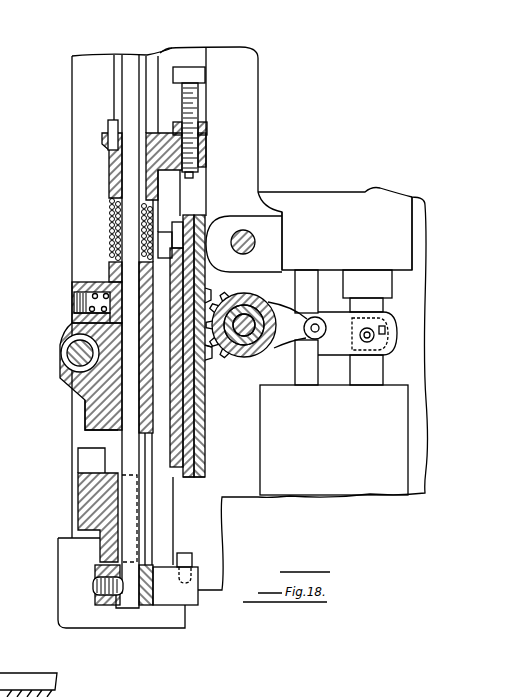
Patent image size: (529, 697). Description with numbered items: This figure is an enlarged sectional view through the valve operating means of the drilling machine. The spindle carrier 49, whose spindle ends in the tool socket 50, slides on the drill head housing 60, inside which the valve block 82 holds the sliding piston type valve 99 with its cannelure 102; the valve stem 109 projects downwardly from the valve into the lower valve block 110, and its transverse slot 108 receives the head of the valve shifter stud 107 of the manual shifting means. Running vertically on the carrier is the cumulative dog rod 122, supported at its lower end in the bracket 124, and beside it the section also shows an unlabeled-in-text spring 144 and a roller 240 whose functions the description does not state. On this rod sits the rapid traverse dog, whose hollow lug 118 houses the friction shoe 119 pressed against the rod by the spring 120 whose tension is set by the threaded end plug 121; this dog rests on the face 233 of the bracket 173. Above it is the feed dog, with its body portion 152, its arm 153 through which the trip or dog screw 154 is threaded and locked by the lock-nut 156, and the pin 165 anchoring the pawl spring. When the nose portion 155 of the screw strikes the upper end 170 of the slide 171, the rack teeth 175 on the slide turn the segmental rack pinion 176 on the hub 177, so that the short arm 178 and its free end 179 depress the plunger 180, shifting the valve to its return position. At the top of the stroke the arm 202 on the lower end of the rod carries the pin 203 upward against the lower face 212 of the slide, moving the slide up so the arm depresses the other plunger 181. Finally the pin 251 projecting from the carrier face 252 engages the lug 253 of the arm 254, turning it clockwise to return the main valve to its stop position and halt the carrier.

The spindle carrier 49 is at (82, 68).
The socket 50 is at (63, 583).
The drill head housing 60 is at (243, 60).
The valve block 82 is at (392, 200).
The sliding piston type valve 99 is at (385, 285).
The cannelure 102 is at (332, 318).
The valve shifter stud 107 is at (386, 334).
The transverse slot 108 is at (385, 328).
The valve stem 109 is at (380, 373).
The valve block 110 is at (400, 412).
The lug 118 is at (75, 318).
The friction shoe 119 is at (108, 290).
The spring 120 is at (92, 295).
The threaded end plug 121 is at (70, 300).
The cumulative dog rod 122 is at (128, 92).
The bracket 124 is at (87, 498).
The coil spring 144 is at (122, 231).
The body portion 152 is at (118, 188).
The arm 153 is at (200, 151).
The trip or dog screw 154 is at (197, 98).
The nose portion 155 is at (195, 175).
The lock-nut 156 is at (205, 129).
The pin 165 is at (108, 127).
The upper end of slide 170 is at (196, 217).
The slide 171 is at (196, 378).
The bracket 173 is at (92, 393).
The rack teeth 175 is at (208, 293).
The segmental rack pinion 176 is at (213, 357).
The hub 177 is at (255, 297).
The short arm 178 is at (285, 347).
The free end 179 is at (318, 332).
The plunger 180 is at (312, 290).
The plunger 181 is at (312, 376).
The arm 202 is at (190, 597).
The pin 203 is at (192, 558).
The lower face 212 is at (197, 478).
The face 233 is at (78, 337).
The roller 240 is at (80, 355).
The pin 251 is at (163, 269).
The face 252 is at (178, 42).
The lug 253 is at (163, 230).
The arm 254 is at (262, 228).